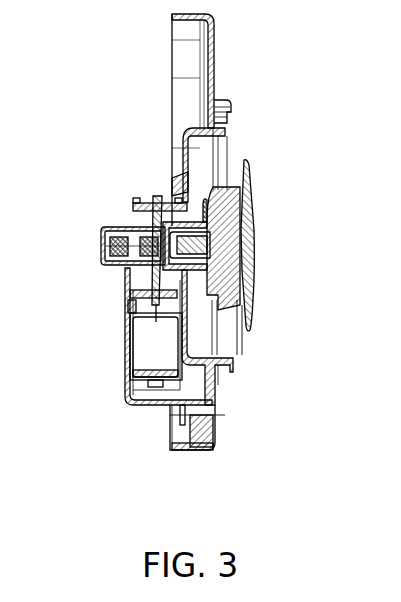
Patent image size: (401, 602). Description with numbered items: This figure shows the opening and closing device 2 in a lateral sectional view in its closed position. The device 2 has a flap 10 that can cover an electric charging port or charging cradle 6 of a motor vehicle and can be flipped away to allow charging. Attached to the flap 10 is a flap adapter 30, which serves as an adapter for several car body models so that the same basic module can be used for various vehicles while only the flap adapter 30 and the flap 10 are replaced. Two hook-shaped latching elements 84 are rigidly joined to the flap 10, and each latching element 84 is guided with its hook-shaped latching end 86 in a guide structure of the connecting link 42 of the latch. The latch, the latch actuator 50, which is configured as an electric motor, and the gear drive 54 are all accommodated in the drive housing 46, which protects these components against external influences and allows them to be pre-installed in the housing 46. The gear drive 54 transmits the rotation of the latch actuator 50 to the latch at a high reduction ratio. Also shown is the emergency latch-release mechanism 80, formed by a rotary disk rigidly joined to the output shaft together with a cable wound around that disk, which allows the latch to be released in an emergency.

The opening and closing device 2 is at (327, 86).
The charging cradle 6 is at (215, 37).
The flap 10 is at (257, 240).
The flap adapter 30 is at (249, 190).
The connecting link 42 is at (101, 243).
The drive housing 46 is at (154, 359).
The latch actuator 50 is at (157, 343).
The gear drive 54 is at (100, 324).
The emergency latch-release mechanism 80 is at (143, 203).
The latching element 84 is at (249, 212).
The latching end 86 is at (130, 222).